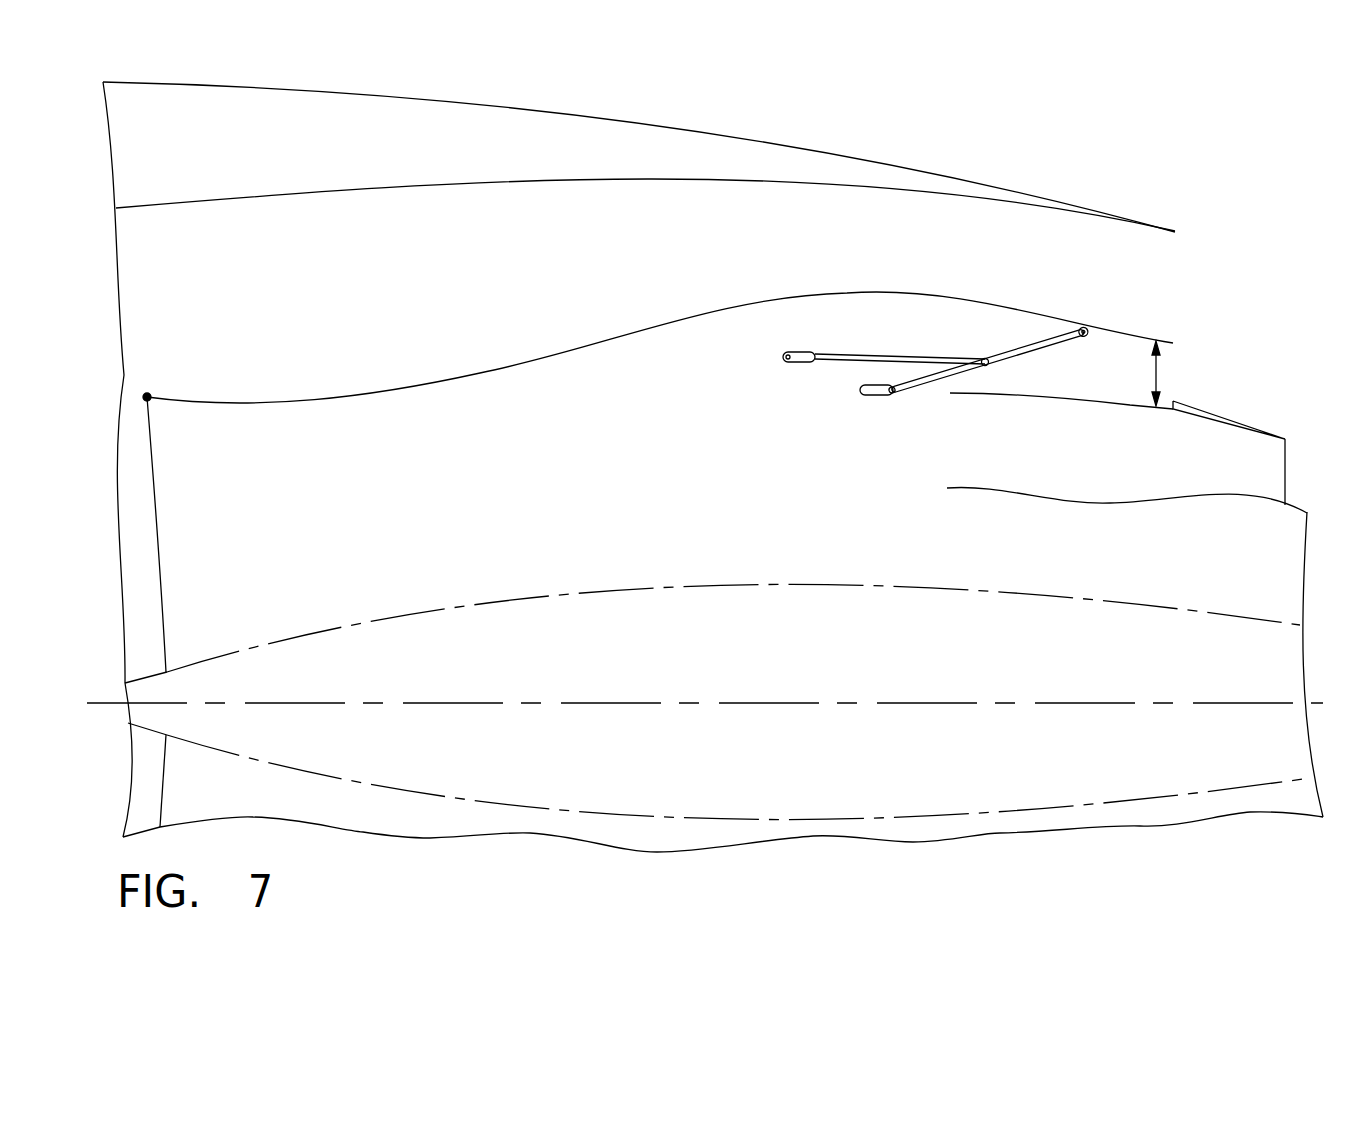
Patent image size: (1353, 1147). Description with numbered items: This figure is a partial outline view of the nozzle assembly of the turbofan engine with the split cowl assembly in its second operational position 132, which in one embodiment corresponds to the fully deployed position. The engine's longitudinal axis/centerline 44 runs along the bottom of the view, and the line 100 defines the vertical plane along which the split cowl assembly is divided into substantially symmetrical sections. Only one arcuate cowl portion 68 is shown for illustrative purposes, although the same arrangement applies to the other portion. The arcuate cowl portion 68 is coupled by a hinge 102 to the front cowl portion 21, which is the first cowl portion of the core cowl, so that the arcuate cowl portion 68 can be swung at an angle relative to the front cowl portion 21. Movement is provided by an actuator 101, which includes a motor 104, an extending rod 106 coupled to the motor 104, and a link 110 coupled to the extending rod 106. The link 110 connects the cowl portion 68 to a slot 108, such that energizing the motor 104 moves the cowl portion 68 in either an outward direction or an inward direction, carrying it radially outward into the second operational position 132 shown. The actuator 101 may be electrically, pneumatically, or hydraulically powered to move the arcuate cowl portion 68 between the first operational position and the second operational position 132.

The front cowl portion 21 is at (123, 392).
The arcuate cowl portion 68 is at (710, 317).
The hinge 102 is at (147, 397).
The motor 104 is at (805, 362).
The extending rod 106 is at (903, 360).
The slot 108 is at (877, 412).
The link 110 is at (1047, 336).
The actuator 101 is at (933, 424).
The second operational position 132 is at (1207, 342).
The longitudinal axis/centerline 44 is at (705, 701).
The line 100 is at (1260, 703).